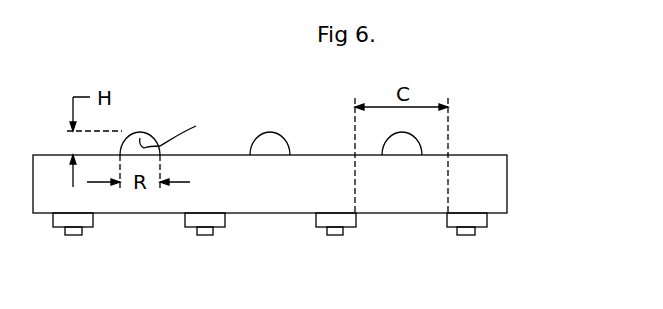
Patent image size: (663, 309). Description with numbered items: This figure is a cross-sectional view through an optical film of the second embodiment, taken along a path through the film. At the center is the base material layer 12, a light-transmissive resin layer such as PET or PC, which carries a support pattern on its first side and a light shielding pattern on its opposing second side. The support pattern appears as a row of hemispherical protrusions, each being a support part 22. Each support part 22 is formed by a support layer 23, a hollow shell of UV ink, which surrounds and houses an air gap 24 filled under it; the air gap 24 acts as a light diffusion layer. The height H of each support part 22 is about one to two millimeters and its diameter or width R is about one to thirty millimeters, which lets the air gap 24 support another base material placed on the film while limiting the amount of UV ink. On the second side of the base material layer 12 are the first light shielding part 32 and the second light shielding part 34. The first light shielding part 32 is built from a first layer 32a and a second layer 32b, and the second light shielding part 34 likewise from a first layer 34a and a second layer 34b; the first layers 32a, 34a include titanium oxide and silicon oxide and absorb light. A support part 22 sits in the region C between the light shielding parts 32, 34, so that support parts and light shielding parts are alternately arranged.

The base material layer 12 is at (501, 180).
The support part 22 is at (188, 120).
The support layer 23 is at (147, 132).
The air gap 24 is at (224, 93).
The first light shielding part 32 is at (377, 248).
The first layer 32a is at (352, 222).
The second layer 32b is at (333, 235).
The second light shielding part 34 is at (509, 248).
The first layer 34a is at (484, 222).
The second layer 34b is at (466, 235).